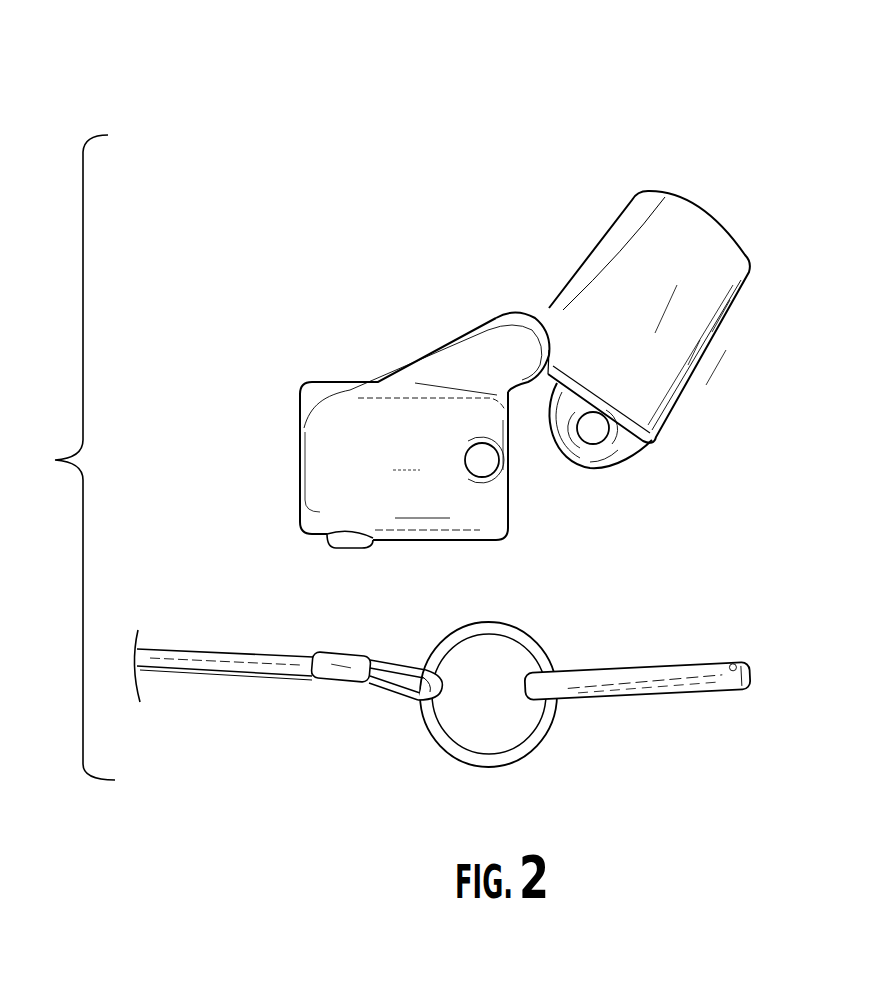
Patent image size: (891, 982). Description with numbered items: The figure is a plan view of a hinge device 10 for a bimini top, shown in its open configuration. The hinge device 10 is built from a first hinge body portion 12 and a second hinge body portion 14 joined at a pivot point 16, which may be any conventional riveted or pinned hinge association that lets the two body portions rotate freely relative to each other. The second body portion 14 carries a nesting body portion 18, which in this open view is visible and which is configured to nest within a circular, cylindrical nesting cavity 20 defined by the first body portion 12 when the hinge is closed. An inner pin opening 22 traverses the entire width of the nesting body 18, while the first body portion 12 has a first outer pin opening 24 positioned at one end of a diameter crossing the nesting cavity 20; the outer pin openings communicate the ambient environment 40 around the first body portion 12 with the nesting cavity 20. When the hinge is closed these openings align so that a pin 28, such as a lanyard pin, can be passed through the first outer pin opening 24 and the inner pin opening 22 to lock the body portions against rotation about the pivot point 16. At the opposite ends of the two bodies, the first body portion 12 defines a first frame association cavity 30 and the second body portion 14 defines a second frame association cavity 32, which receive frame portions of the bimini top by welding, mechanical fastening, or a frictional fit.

The hinge device 10 is at (758, 121).
The first hinge body portion 12 is at (353, 445).
The second hinge body portion 14 is at (676, 273).
The pivot point 16 is at (512, 345).
The nesting body portion 18 is at (617, 448).
The nesting cavity 20 is at (520, 497).
The inner pin opening 22 is at (593, 425).
The first outer pin opening 24 is at (482, 460).
The pin 28 is at (658, 668).
The first frame association cavity 30 is at (296, 460).
The second frame association cavity 32 is at (721, 220).
The ambient environment 40 is at (334, 608).